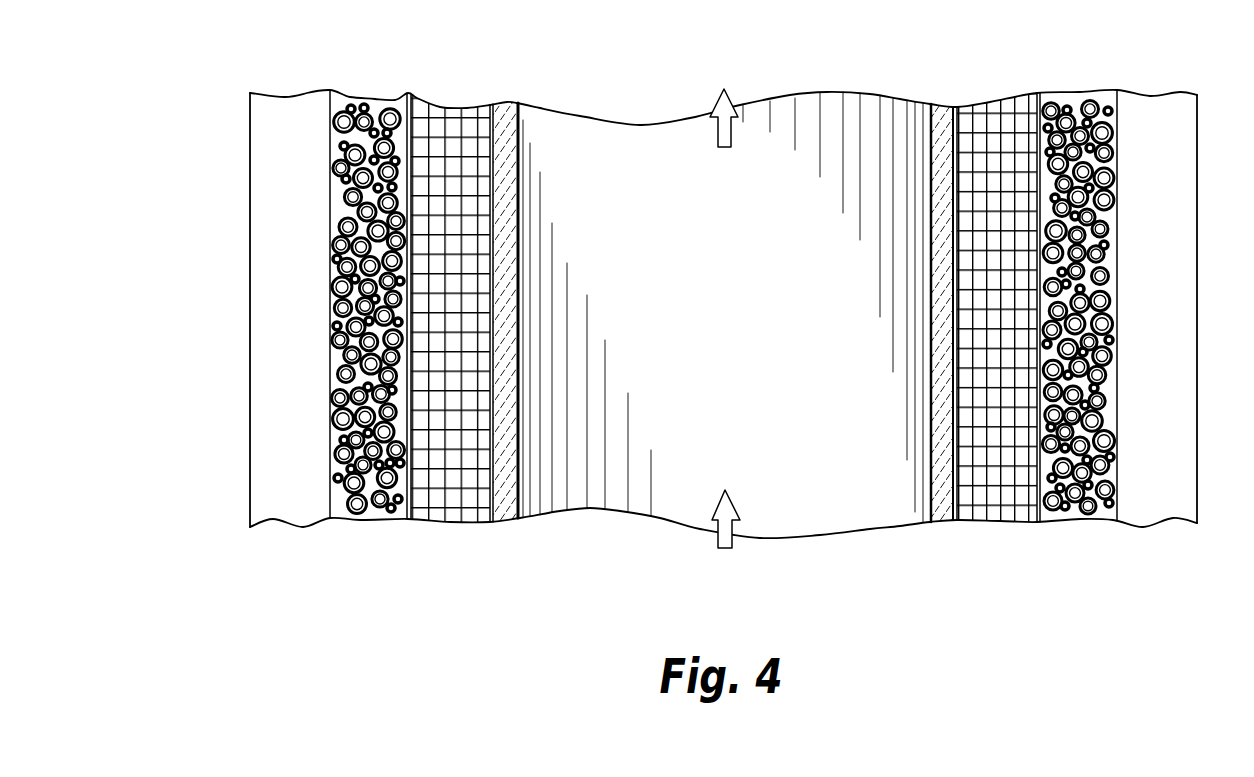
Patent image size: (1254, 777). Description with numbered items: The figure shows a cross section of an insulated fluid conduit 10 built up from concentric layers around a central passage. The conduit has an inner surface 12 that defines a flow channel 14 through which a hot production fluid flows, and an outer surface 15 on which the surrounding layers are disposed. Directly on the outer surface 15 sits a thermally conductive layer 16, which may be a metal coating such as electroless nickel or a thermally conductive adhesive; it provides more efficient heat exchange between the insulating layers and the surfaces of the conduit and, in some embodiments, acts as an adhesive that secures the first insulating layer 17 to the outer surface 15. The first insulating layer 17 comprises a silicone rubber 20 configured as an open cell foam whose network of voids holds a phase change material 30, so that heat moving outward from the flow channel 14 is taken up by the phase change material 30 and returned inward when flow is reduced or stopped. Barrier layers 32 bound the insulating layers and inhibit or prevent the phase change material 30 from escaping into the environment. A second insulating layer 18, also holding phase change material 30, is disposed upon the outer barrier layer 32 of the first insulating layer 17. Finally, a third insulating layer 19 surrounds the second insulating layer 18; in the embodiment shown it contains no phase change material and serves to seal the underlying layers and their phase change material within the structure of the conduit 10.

The insulated fluid conduit 10 is at (137, 99).
The inner surface 12 is at (518, 140).
The flow channel 14 is at (658, 320).
The outer surface 15 is at (510, 118).
The thermally conductive layer 16 is at (695, 299).
The first insulating layer 17 is at (954, 83).
The second insulating layer 18 is at (1117, 83).
The third insulating layer 19 is at (1200, 83).
The silicone rubber 20 is at (390, 515).
The phase change material 30 is at (367, 508).
The barrier layer 32 is at (957, 518).